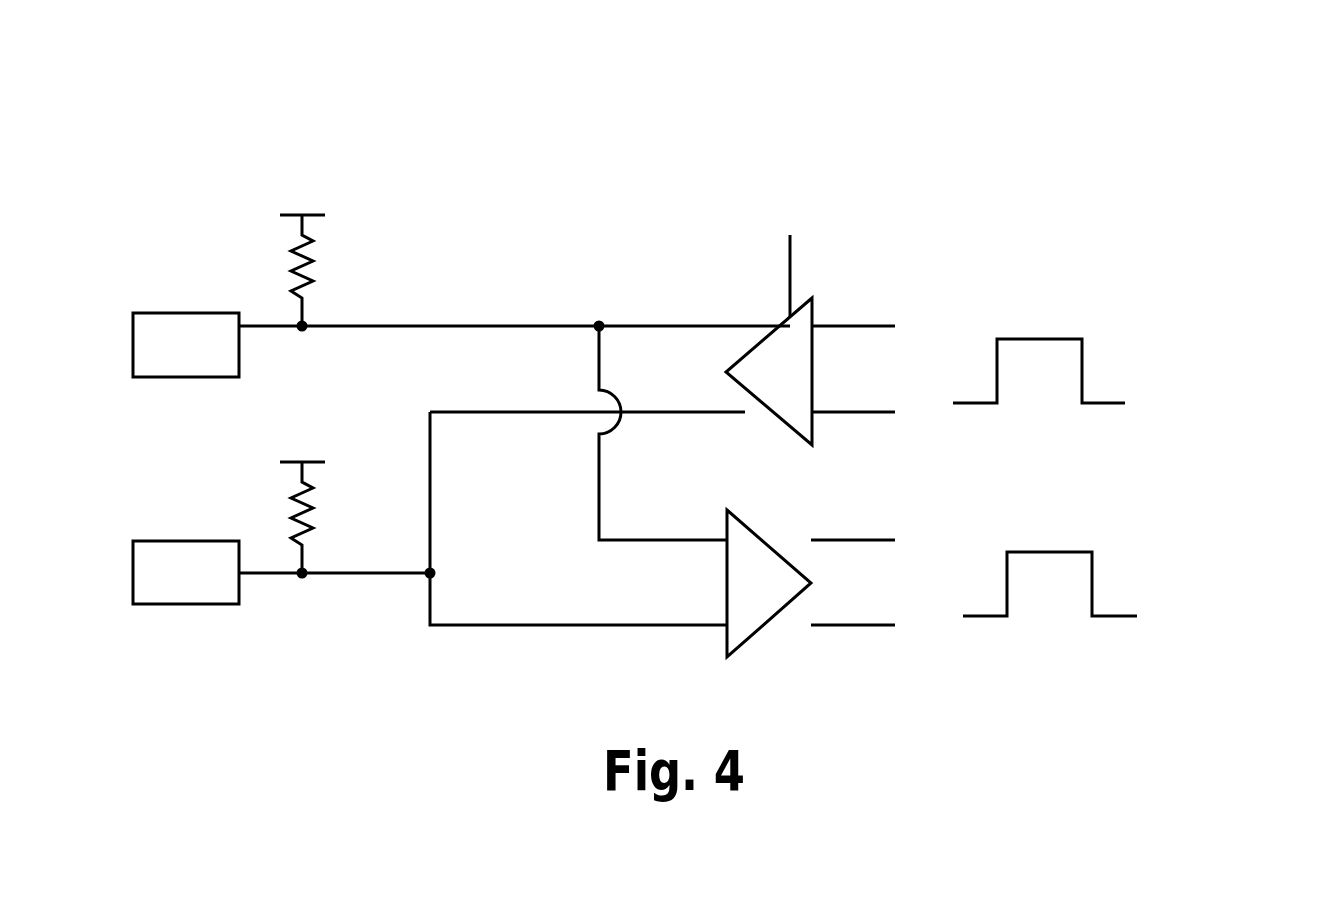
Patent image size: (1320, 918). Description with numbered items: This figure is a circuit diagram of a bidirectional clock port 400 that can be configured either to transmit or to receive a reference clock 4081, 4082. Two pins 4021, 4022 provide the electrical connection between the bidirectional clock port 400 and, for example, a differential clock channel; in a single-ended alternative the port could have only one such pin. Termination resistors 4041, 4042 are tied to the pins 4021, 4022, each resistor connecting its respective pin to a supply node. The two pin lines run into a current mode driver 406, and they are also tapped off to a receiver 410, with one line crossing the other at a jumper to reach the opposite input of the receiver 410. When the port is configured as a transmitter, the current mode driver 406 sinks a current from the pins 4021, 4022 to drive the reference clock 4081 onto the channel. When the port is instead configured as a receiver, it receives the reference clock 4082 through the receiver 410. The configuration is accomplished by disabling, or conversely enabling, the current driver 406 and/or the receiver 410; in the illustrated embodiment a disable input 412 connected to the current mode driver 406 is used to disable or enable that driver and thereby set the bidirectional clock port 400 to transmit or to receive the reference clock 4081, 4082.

The bidirectional clock port 400 is at (80, 90).
The pin 4021 is at (186, 345).
The pin 4022 is at (186, 572).
The termination resistor 4041 is at (323, 266).
The termination resistor 4042 is at (323, 487).
The current mode driver 406 is at (783, 422).
The reference clock 4081 is at (1022, 308).
The reference clock 4082 is at (1028, 532).
The receiver 410 is at (752, 530).
The disable input 412 is at (788, 264).